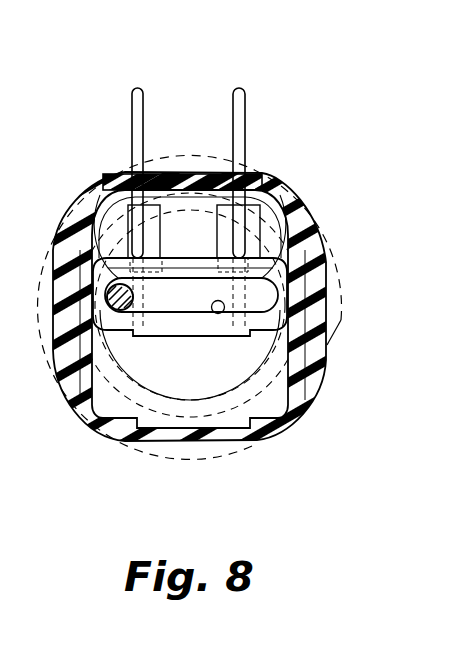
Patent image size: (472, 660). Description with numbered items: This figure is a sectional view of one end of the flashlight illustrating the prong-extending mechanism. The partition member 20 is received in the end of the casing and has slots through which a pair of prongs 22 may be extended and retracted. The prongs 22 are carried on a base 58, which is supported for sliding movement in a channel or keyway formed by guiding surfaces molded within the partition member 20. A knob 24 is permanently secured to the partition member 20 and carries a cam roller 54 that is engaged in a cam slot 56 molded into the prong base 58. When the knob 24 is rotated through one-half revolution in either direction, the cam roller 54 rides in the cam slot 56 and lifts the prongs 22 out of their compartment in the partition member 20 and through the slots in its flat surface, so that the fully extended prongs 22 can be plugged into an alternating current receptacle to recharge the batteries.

The partition member 20 is at (275, 180).
The prongs 22 is at (232, 100).
The knob 24 is at (343, 308).
The cam roller 54 is at (136, 297).
The cam slot 56 is at (218, 313).
The base 58 is at (283, 208).